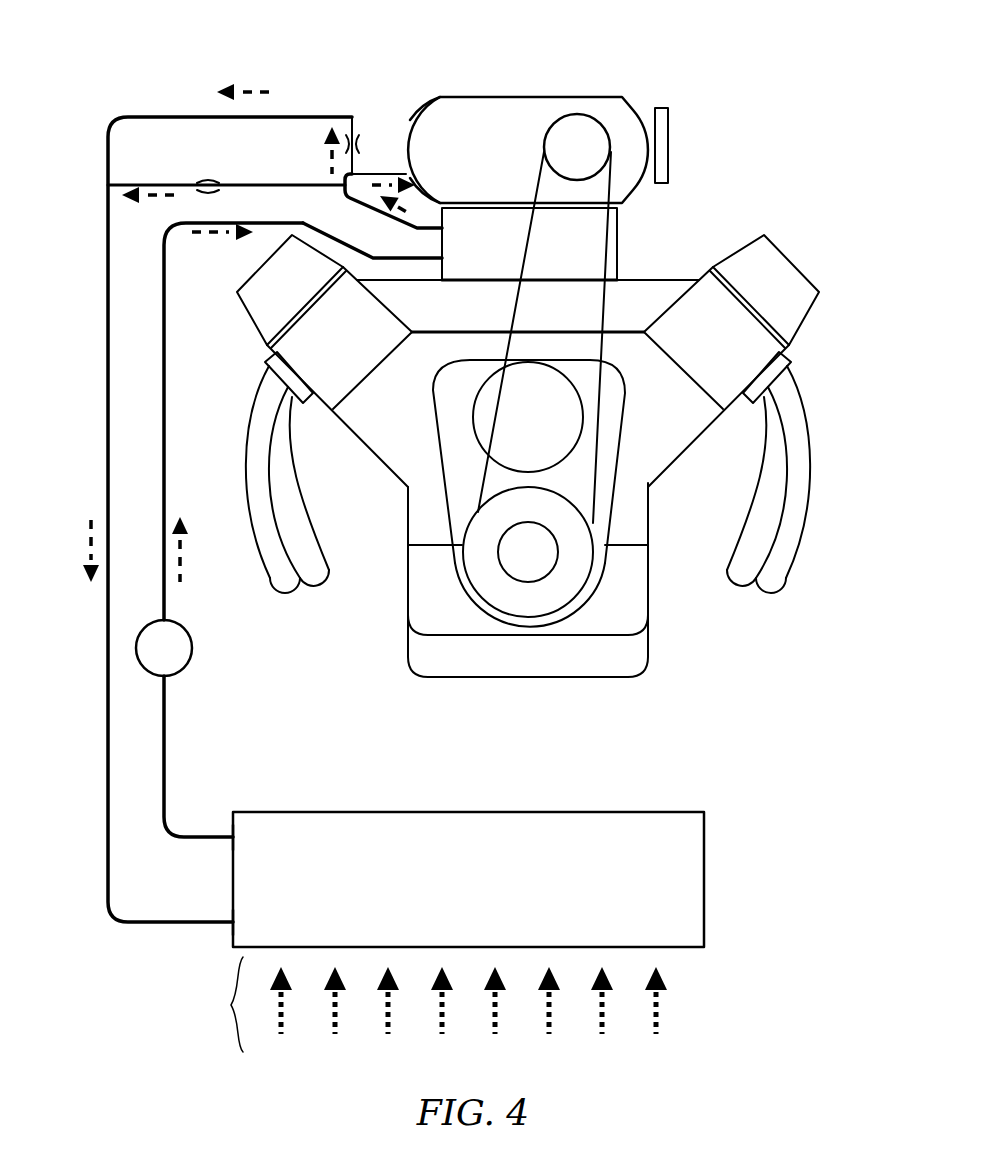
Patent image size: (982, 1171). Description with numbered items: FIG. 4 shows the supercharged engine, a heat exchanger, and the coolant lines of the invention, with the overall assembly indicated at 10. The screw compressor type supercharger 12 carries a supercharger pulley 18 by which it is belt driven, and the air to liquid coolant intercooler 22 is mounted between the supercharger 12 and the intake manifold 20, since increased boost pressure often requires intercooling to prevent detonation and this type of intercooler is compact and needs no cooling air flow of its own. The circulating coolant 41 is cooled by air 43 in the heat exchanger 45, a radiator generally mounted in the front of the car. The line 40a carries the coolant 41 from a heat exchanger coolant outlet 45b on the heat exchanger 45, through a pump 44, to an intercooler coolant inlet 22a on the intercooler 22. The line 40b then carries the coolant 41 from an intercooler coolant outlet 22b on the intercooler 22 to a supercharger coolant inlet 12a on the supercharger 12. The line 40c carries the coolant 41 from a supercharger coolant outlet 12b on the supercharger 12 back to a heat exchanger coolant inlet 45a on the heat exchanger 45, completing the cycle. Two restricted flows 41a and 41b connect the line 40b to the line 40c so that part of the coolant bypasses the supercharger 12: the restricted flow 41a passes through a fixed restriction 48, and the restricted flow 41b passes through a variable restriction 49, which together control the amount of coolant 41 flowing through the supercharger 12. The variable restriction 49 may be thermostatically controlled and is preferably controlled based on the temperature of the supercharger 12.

The engine assembly 10 is at (750, 118).
The supercharger 12 is at (500, 159).
The supercharger coolant inlet 12a is at (415, 177).
The supercharger coolant outlet 12b is at (420, 113).
The supercharger pulley 18 is at (580, 145).
The intake manifold 20 is at (448, 321).
The intercooler 22 is at (555, 259).
The intercooler coolant inlet 22a is at (442, 258).
The intercooler coolant outlet 22b is at (442, 230).
The line 40a is at (166, 735).
The line 40b is at (378, 213).
The line 40c is at (105, 400).
The coolant 41 is at (253, 90).
The restricted flow 41a is at (155, 198).
The restricted flow 41b is at (328, 157).
The air 43 is at (231, 1005).
The pump 44 is at (183, 643).
The heat exchanger 45 is at (620, 879).
The heat exchanger coolant inlet 45a is at (233, 923).
The heat exchanger coolant outlet 45b is at (233, 838).
The fixed restriction 48 is at (208, 182).
The variable restriction 49 is at (362, 145).